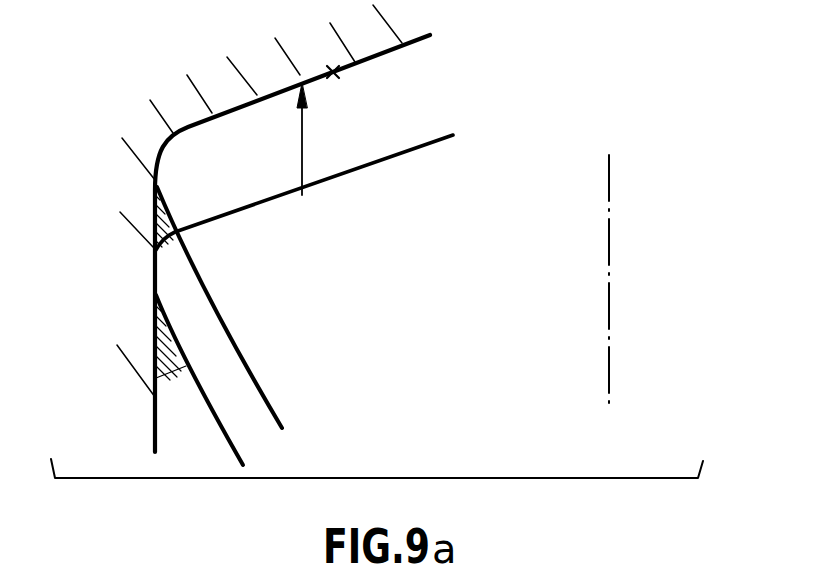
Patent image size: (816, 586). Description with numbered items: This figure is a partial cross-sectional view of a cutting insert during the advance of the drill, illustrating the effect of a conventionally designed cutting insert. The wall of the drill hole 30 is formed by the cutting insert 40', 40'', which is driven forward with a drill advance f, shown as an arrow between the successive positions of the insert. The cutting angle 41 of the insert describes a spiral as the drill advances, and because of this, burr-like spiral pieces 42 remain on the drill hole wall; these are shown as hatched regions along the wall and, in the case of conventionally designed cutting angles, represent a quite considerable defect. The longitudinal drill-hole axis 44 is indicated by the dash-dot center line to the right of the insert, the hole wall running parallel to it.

The wall of the drill hole 30 is at (331, 78).
The cutting insert 40' is at (304, 300).
The cutting insert 40'' is at (273, 228).
The cutting angle 41 is at (161, 144).
The burr-like spiral pieces 42 is at (153, 340).
The longitudinal drill-hole axis 44 is at (609, 248).
The drill advance f is at (303, 138).